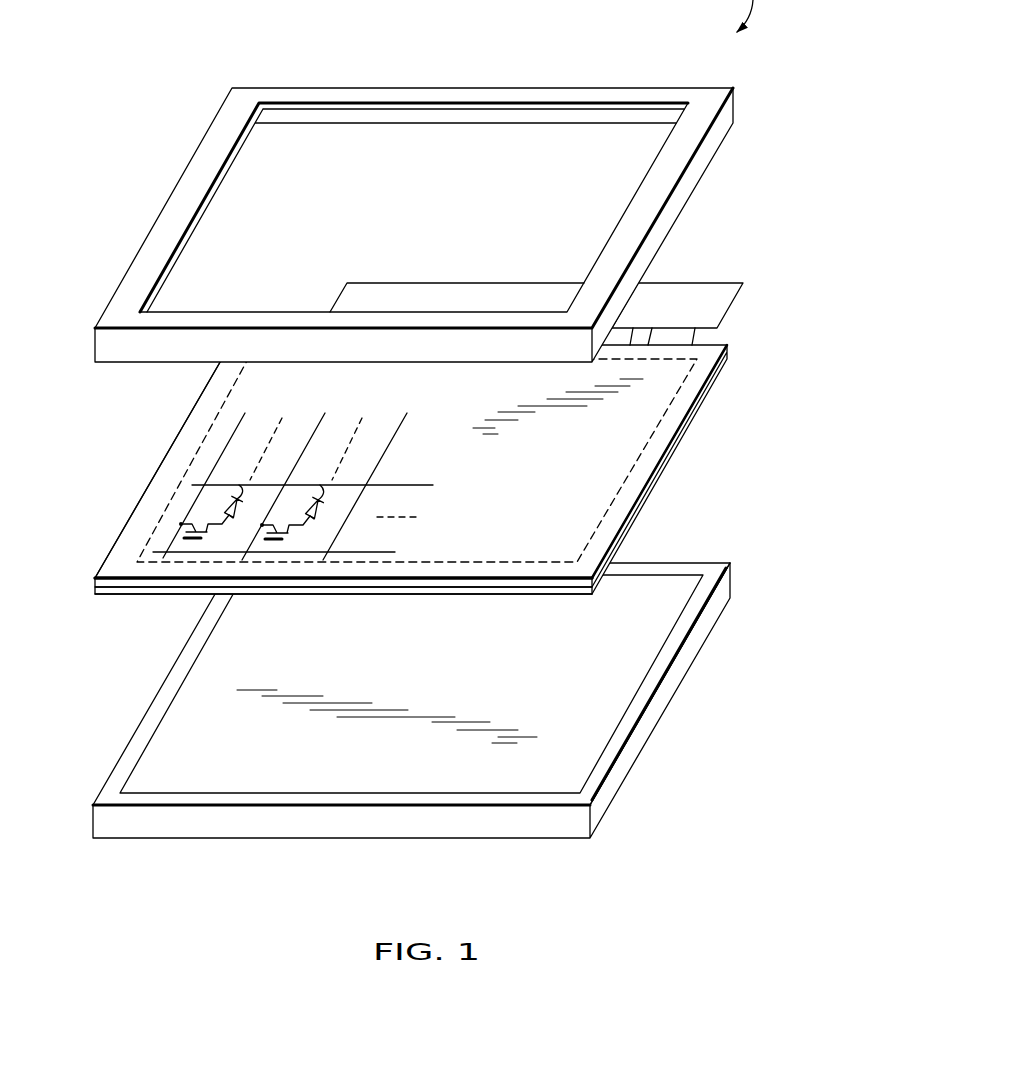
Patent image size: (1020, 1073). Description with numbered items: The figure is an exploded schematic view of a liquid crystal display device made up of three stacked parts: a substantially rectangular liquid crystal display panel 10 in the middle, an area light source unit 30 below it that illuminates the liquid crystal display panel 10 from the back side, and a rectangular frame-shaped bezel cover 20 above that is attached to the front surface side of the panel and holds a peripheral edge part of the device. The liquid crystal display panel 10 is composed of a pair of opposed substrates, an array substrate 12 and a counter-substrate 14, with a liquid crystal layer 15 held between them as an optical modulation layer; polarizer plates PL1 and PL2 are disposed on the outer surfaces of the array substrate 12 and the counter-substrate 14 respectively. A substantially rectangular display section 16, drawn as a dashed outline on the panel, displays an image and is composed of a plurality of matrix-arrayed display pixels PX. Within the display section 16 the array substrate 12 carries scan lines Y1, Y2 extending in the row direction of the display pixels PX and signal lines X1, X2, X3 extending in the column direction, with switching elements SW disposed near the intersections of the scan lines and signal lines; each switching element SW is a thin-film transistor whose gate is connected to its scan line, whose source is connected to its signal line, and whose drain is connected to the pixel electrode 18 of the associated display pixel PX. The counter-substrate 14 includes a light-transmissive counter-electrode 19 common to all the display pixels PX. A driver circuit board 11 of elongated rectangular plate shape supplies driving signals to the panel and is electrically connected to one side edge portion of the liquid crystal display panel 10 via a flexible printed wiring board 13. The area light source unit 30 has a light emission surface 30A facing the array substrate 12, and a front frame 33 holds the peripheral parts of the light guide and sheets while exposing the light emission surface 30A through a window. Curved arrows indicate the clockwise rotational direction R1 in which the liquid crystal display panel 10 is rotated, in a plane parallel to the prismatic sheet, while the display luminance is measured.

The liquid crystal display panel 10 is at (753, 381).
The driver circuit board 11 is at (703, 282).
The array substrate 12 is at (103, 590).
The flexible printed wiring board 13 is at (682, 337).
The counter-substrate 14 is at (108, 572).
The liquid crystal layer 15 is at (243, 497).
The display section 16 is at (610, 510).
The pixel electrode 18 is at (233, 518).
The counter-electrode 19 is at (240, 488).
The bezel cover 20 is at (757, 122).
The area light source unit 30 is at (760, 595).
The light emission surface 30A is at (328, 775).
The front frame 33 is at (625, 730).
The polarizer plate PL1 is at (155, 590).
The polarizer plate PL2 is at (142, 515).
The display pixel PX is at (213, 505).
The switching element SW is at (180, 537).
The signal line X1 is at (245, 413).
The signal line X2 is at (325, 413).
The signal line X3 is at (407, 413).
The scan line Y1 is at (395, 552).
The scan line Y2 is at (433, 485).
The rotational direction R1 is at (168, 380).